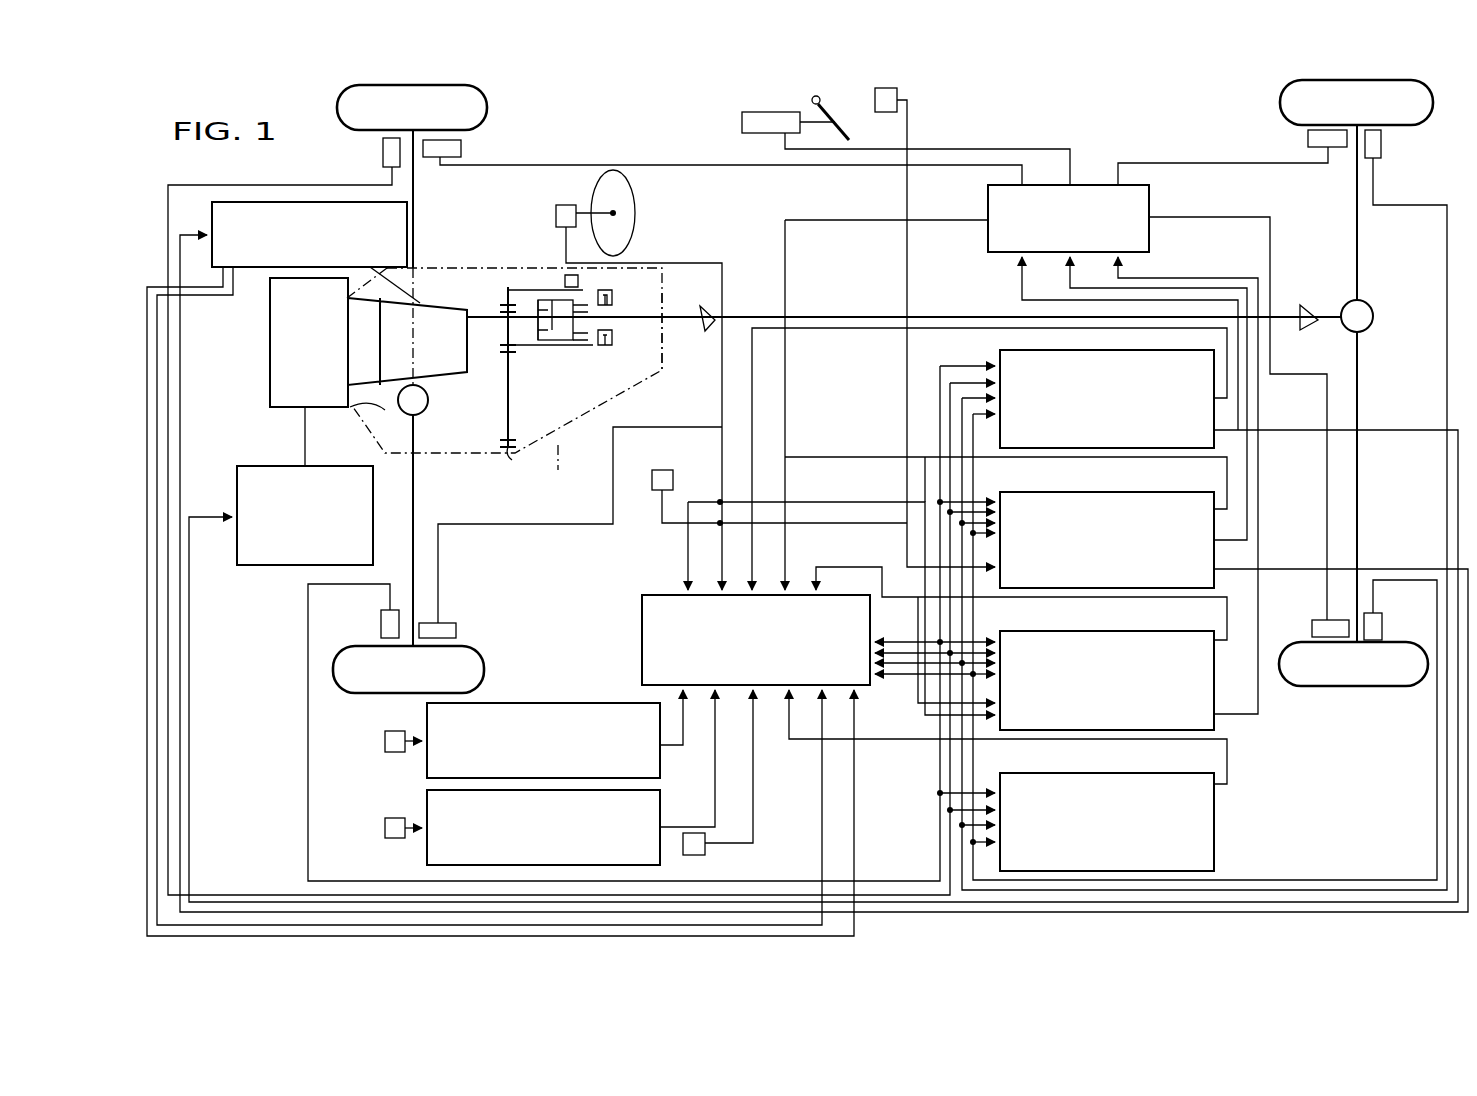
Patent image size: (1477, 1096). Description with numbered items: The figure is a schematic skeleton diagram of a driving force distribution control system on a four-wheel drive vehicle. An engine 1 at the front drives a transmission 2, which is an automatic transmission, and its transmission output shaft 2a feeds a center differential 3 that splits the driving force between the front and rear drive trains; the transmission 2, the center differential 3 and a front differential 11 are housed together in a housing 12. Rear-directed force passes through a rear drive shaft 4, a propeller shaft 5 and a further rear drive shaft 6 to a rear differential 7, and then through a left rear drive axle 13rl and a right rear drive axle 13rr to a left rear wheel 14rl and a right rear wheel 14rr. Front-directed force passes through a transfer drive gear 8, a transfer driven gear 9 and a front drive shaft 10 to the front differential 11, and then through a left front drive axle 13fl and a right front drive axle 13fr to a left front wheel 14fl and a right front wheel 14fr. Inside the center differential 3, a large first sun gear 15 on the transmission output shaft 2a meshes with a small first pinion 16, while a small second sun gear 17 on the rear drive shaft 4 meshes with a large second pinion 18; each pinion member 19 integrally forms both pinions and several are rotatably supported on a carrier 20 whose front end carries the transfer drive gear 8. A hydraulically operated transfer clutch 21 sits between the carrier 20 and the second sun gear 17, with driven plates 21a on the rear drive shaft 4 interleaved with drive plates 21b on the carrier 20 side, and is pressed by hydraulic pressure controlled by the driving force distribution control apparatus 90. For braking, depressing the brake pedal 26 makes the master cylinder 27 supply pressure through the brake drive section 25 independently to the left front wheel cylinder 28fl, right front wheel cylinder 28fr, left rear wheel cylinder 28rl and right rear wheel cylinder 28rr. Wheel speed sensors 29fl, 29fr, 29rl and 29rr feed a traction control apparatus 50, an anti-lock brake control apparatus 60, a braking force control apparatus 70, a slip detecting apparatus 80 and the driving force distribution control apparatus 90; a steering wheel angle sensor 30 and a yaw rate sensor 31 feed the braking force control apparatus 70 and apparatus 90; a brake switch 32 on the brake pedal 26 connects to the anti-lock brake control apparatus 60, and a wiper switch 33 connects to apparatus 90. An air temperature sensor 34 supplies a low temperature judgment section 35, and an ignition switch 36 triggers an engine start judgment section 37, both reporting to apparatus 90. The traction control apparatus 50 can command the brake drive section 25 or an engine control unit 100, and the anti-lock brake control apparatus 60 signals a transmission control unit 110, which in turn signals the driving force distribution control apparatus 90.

The engine 1 is at (270, 355).
The transmission 2 is at (420, 303).
The transmission output shaft 2a is at (500, 300).
The center differential 3 is at (570, 440).
The rear drive shaft 4 is at (645, 340).
The propeller shaft 5 is at (830, 317).
The rear drive shaft 6 is at (1318, 316).
The rear differential 7 is at (1373, 312).
The transfer drive gear 8 is at (478, 268).
The transfer driven gear 9 is at (519, 466).
The front drive shaft 10 is at (428, 402).
The front differential 11 is at (360, 410).
The housing 12 is at (568, 475).
The right front drive axle 13fr is at (413, 235).
The left front drive axle 13fl is at (413, 495).
The right rear drive axle 13rr is at (1380, 255).
The left rear drive axle 13rl is at (1357, 528).
The right front wheel 14fr is at (487, 107).
The left front wheel 14fl is at (484, 670).
The right rear wheel 14rr is at (1280, 104).
The left rear wheel 14rl is at (1382, 686).
The first sun gear 15 is at (548, 340).
The first pinion 16 is at (528, 262).
The second sun gear 17 is at (578, 345).
The second pinion 18 is at (632, 228).
The pinion member 19 is at (553, 270).
The carrier 20 is at (505, 262).
The transfer clutch 21 is at (740, 214).
The driven plate 21a is at (620, 337).
The drive plate 21b is at (615, 296).
The brake drive section 25 is at (1149, 202).
The brake pedal 26 is at (840, 115).
The master cylinder 27 is at (742, 115).
The right front wheel cylinder 28fr is at (461, 149).
The left front wheel cylinder 28fl is at (456, 631).
The right rear wheel cylinder 28rr is at (1308, 138).
The left rear wheel cylinder 28rl is at (1328, 637).
The wheel speed sensor 29fr is at (383, 152).
The wheel speed sensor 29fl is at (381, 622).
The wheel speed sensor 29rr is at (1381, 144).
The wheel speed sensor 29rl is at (1397, 612).
The steering wheel angle sensor 30 is at (556, 210).
The yaw rate sensor 31 is at (640, 482).
The brake switch 32 is at (900, 90).
The wiper switch 33 is at (700, 855).
The air temperature sensor 34 is at (385, 741).
The low temperature judgment section 35 is at (592, 703).
The ignition switch 36 is at (385, 828).
The engine start judgment section 37 is at (676, 810).
The traction control apparatus 50 is at (985, 350).
The anti-lock brake control apparatus 60 is at (1110, 487).
The braking force control apparatus 70 is at (1110, 626).
The slip detecting apparatus 80 is at (1110, 768).
The driving force distribution control apparatus 90 is at (642, 597).
The engine control unit 100 is at (272, 466).
The transmission control unit 110 is at (268, 202).